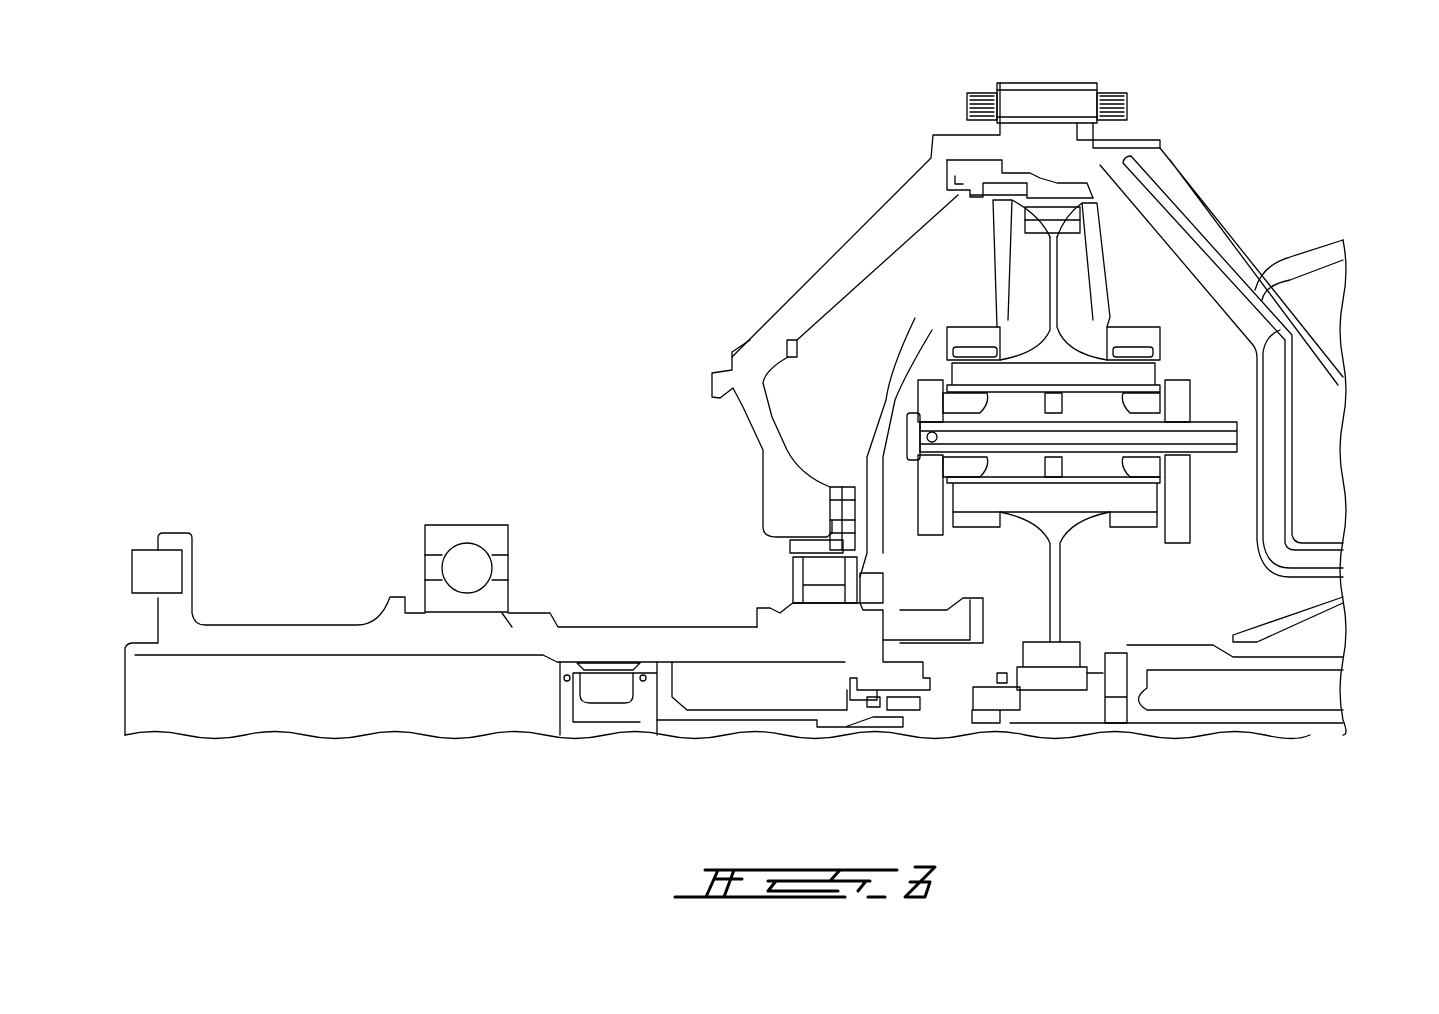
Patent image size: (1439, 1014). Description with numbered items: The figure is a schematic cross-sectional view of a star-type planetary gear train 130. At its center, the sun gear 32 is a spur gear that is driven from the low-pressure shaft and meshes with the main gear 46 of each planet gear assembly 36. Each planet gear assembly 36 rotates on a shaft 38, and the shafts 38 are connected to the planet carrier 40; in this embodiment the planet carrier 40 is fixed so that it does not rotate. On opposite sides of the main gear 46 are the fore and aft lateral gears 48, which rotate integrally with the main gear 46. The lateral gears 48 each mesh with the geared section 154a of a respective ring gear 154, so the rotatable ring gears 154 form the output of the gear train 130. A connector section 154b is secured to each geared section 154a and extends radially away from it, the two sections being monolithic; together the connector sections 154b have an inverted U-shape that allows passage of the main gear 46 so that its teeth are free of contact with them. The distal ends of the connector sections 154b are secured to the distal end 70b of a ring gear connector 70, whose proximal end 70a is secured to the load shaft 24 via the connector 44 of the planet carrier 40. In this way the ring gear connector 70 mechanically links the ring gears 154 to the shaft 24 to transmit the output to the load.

The shaft 24 is at (438, 637).
The sun gear 32 is at (1063, 678).
The planet gear assembly 36 is at (1067, 507).
The shaft 38 is at (1217, 420).
The planet carrier 40 is at (1180, 500).
The connector 44 is at (890, 627).
The main gear 46 is at (1058, 230).
The fore and aft lateral gears 48 is at (1147, 353).
The ring gear connector 70 is at (910, 330).
The proximal end 70a is at (870, 580).
The distal end 70b is at (985, 200).
The gear train 130 is at (1000, 557).
The ring gears 154 is at (990, 271).
The geared section 154a is at (973, 320).
The connector section 154b is at (1045, 232).